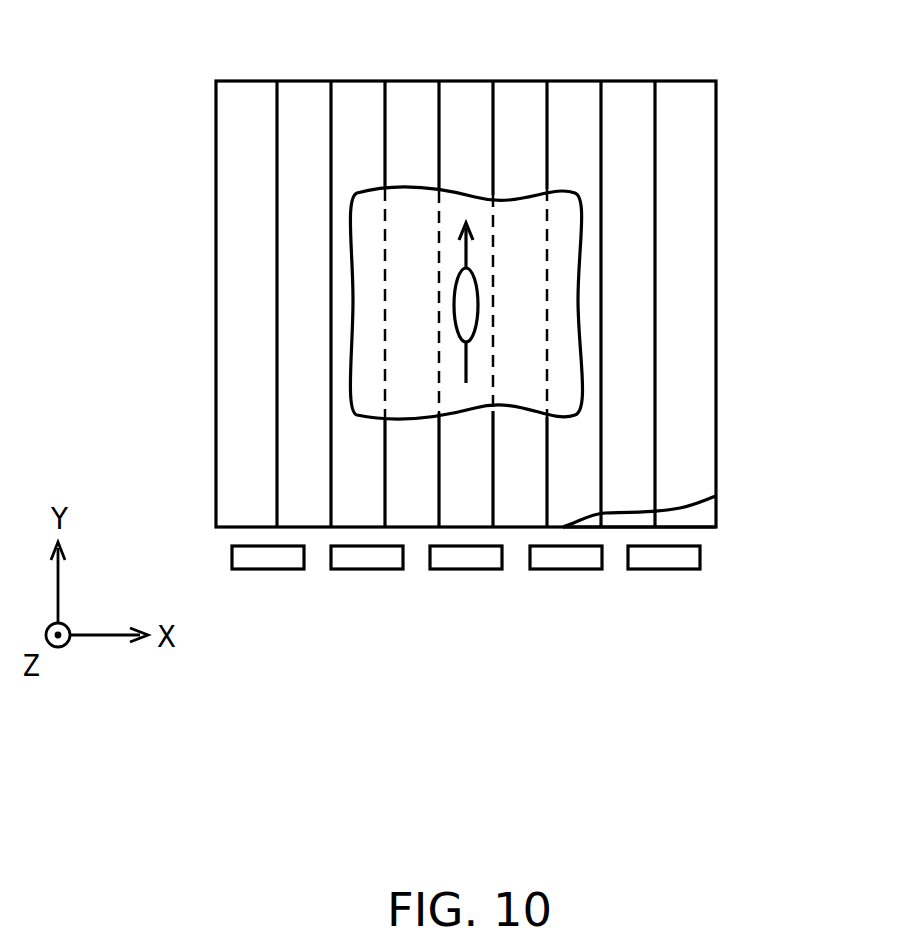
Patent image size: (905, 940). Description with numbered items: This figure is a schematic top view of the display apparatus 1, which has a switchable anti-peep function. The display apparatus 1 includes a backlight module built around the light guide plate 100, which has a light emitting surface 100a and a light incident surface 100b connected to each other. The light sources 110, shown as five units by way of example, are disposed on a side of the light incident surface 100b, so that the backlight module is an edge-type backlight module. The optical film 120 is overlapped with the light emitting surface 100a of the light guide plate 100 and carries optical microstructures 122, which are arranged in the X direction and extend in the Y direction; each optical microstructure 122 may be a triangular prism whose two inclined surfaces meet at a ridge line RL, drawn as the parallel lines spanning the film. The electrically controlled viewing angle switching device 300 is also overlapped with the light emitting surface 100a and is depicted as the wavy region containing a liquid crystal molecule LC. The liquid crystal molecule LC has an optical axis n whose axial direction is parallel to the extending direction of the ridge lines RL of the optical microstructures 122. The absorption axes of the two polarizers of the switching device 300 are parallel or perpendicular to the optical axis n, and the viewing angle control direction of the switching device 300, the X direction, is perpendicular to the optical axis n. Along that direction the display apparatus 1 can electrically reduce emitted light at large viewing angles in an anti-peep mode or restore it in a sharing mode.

The display apparatus 1 is at (791, 687).
The light guide plate 100 is at (716, 512).
The light emitting surface 100a is at (688, 503).
The light incident surface 100b is at (703, 530).
The light source 110 is at (542, 570).
The optical film 120 is at (616, 517).
The optical microstructure 122 is at (601, 110).
The electrically controlled viewing angle switching device 300 is at (583, 387).
The liquid crystal molecule LC is at (468, 308).
The optical axis n is at (469, 251).